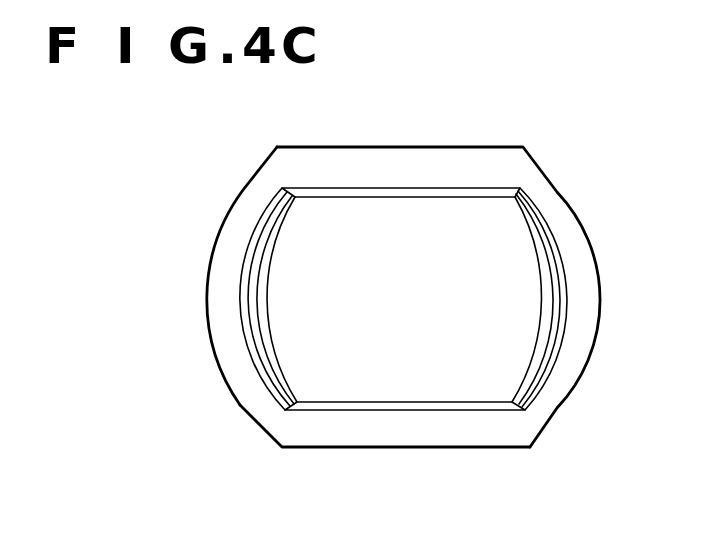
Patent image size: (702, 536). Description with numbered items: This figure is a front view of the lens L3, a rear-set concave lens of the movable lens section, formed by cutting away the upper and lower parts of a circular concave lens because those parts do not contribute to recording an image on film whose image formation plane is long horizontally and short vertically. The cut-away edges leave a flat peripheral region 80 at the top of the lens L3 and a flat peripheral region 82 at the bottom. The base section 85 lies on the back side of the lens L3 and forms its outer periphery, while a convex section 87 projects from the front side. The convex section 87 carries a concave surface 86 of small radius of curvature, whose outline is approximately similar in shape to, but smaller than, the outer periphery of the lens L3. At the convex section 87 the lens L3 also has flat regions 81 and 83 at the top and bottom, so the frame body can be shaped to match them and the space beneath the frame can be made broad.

The lens L3 is at (552, 109).
The flat peripheral region 80 is at (455, 147).
The flat region 81 is at (373, 187).
The flat peripheral region 82 is at (462, 447).
The flat region 83 is at (387, 409).
The base section 85 is at (243, 176).
The concave surface 86 is at (502, 348).
The convex section 87 is at (530, 268).